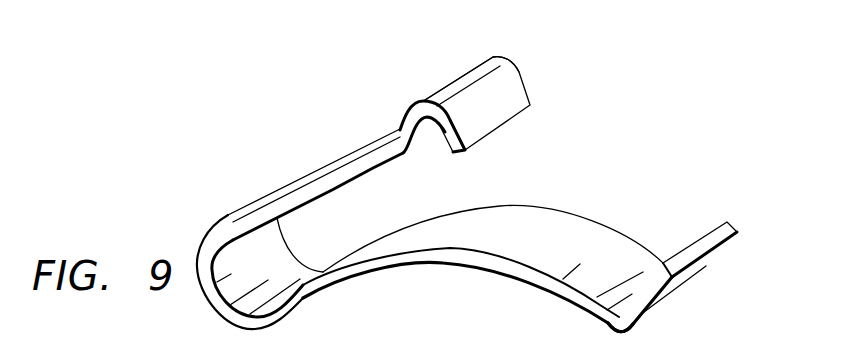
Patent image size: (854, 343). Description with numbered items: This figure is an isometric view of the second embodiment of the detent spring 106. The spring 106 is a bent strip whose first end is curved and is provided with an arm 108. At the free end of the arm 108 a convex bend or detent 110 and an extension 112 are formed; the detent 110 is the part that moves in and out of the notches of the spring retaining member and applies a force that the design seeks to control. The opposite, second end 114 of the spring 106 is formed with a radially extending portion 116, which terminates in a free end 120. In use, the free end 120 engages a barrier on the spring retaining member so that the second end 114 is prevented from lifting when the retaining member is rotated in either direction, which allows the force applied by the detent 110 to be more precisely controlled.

The spring 106 is at (478, 172).
The arm 108 is at (345, 153).
The convex bend or detent 110 is at (489, 57).
The extension 112 is at (493, 77).
The second end 114 is at (669, 300).
The radially extending portion 116 is at (703, 265).
The free end 120 is at (702, 243).